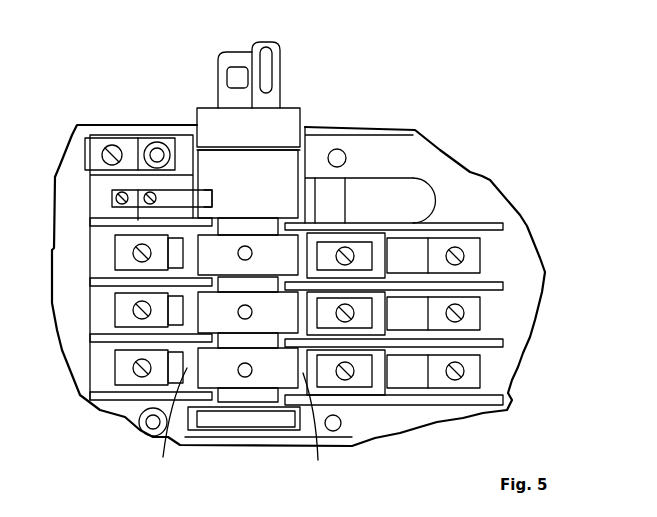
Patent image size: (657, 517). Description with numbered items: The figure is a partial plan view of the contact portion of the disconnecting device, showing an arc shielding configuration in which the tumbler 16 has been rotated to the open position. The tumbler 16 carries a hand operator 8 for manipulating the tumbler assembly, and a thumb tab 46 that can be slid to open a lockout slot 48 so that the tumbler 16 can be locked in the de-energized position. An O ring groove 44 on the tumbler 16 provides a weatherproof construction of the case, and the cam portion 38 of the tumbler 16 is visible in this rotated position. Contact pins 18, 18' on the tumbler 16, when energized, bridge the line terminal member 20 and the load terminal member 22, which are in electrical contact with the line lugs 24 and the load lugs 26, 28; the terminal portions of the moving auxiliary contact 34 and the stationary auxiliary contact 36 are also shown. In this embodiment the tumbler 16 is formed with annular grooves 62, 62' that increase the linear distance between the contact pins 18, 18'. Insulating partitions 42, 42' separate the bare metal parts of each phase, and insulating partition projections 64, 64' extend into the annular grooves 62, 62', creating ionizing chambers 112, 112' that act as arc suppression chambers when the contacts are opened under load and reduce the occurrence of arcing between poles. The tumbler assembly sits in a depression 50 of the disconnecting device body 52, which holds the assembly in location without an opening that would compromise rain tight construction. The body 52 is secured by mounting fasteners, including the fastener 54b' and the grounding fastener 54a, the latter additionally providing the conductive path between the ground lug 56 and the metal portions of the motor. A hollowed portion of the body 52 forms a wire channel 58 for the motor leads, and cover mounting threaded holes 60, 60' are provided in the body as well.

The hand operator 8 is at (217, 72).
The tumbler 16 is at (248, 184).
The contact pins 18 is at (248, 255).
The aperture 18' is at (260, 376).
The line terminal member 20 is at (185, 256).
The load terminal member 22 is at (298, 310).
The line lugs 24 is at (118, 298).
The load lugs 26 is at (374, 247).
The terminal block 28 is at (478, 312).
The moving auxiliary contact 34 is at (212, 202).
The stationary auxiliary contact 36 is at (112, 198).
The cam portion 38 is at (200, 190).
The insulating partition 42 is at (135, 229).
The bus bar 42' is at (402, 239).
The O ring groove 44 is at (258, 142).
The thumb tab 46 is at (267, 43).
The lockout slot 48 is at (247, 75).
The depression 50 is at (258, 430).
The disconnecting device body 52 is at (450, 160).
The grounding fastener 54a is at (152, 140).
The mounting hole 54b' is at (135, 430).
The ground lug 56 is at (130, 140).
The wire channel 58 is at (375, 200).
The cover mounting threaded holes 60 is at (345, 138).
The hole 60' is at (352, 423).
The annular grooves 62 is at (248, 368).
The housing section 62' is at (244, 416).
The insulating partition projection 64 is at (258, 219).
The connector 64' is at (242, 296).
The ionizing chamber 112 is at (171, 422).
The lead 112' is at (322, 428).